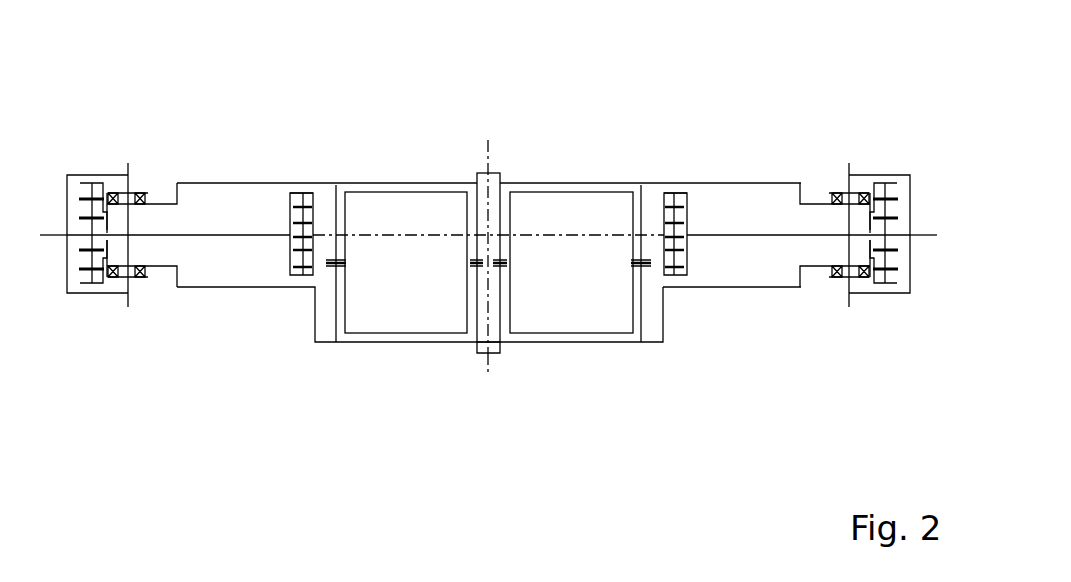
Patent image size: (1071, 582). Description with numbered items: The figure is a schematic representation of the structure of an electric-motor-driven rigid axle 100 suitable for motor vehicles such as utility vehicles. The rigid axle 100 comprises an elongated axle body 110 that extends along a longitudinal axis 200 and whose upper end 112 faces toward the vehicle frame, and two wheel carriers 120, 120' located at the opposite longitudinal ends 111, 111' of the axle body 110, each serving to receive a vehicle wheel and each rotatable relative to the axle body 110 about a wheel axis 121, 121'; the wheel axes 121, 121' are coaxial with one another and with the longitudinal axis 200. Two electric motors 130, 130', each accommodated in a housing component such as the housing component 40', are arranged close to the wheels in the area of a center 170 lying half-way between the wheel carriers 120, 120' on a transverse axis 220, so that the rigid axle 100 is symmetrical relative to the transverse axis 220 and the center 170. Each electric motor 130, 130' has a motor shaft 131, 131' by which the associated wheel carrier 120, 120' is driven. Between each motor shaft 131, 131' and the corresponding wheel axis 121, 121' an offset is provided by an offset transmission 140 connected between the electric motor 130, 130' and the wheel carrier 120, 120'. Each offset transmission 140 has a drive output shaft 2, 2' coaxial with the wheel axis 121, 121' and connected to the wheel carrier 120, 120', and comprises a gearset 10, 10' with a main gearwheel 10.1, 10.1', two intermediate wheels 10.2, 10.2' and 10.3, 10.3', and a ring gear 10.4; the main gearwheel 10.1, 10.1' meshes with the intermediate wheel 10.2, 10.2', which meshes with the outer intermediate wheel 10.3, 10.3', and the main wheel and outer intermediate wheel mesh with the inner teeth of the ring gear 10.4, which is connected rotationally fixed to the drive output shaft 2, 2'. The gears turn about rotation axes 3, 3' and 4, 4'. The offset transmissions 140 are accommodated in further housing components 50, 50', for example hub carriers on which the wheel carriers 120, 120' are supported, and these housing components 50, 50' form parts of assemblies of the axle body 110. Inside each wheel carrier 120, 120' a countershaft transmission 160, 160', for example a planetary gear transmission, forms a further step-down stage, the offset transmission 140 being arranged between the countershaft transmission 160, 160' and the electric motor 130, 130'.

The drive output shaft 2 is at (178, 120).
The drive output shaft 2' is at (798, 148).
The rotation axis 3 is at (372, 168).
The rotation axis 3' is at (629, 140).
The rotation axis 4 is at (339, 142).
The rotation axis 4' is at (683, 142).
The gearset 10 is at (331, 140).
The gearset 10' is at (648, 168).
The main gearwheel 10.1 is at (318, 357).
The main gearwheel 10.1' is at (705, 357).
The intermediate wheel 10.2 is at (272, 149).
The intermediate wheel 10.2' is at (738, 342).
The intermediate wheel 10.3 is at (290, 107).
The intermediate wheel 10.3' is at (707, 107).
The ring gear 10.4 is at (291, 250).
The housing component 40' is at (575, 367).
The housing component 50 is at (331, 315).
The housing component 50' is at (732, 396).
The rigid axle 100 is at (469, 397).
The axle body 110 is at (511, 182).
The longitudinal end 111 is at (127, 320).
The longitudinal end 111' is at (835, 344).
The upper end 112 is at (476, 172).
The wheel carrier 120 is at (106, 184).
The wheel carrier 120' is at (872, 156).
The wheel axis 121 is at (56, 148).
The wheel axis 121' is at (907, 148).
The electric motor 130 is at (406, 320).
The electric motor 130' is at (571, 348).
The motor shaft 131 is at (357, 382).
The motor shaft 131' is at (658, 382).
The offset transmission 140 is at (308, 184).
The countershaft transmission 160 is at (70, 315).
The countershaft transmission 160' is at (900, 315).
The center 170 is at (496, 358).
The longitudinal axis 200 is at (157, 233).
The transverse axis 220 is at (488, 141).